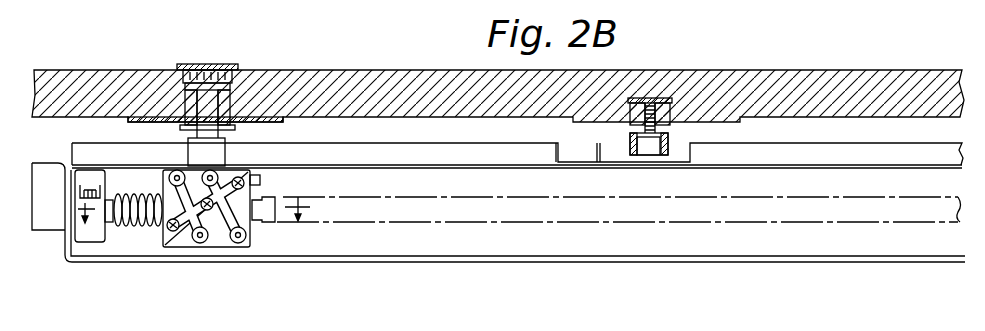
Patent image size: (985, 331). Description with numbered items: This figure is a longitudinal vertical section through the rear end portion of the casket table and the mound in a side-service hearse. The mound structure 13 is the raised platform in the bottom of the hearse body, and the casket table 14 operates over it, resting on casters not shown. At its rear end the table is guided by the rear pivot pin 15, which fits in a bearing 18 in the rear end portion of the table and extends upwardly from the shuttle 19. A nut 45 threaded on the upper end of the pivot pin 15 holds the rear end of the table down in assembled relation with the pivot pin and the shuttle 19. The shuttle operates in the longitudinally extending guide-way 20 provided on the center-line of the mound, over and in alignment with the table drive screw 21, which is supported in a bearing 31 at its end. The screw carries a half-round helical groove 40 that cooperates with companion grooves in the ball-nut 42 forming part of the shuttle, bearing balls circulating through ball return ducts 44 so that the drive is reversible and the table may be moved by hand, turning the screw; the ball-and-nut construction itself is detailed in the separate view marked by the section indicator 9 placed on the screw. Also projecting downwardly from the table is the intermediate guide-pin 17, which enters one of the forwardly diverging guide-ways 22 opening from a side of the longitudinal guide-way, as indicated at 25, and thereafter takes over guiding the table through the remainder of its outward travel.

The mound structure 13 is at (54, 164).
The casket table 14 is at (675, 70).
The rear pivot pin 15 is at (246, 93).
The intermediate guide-pin 17 is at (656, 148).
The bearing 18 is at (184, 104).
The shuttle 19 is at (188, 154).
The longitudinally extending guide-way 20 is at (428, 156).
The table drive screw 21 is at (447, 197).
The diverging guide-way 22 is at (607, 149).
The guide-way opening 25 is at (562, 153).
The bearing 31 is at (83, 241).
The helical groove 40 is at (138, 226).
The ball-nut 42 is at (185, 241).
The ball return duct 44 is at (238, 242).
The nut 45 is at (212, 73).
The dimension indicator 9 is at (200, 217).